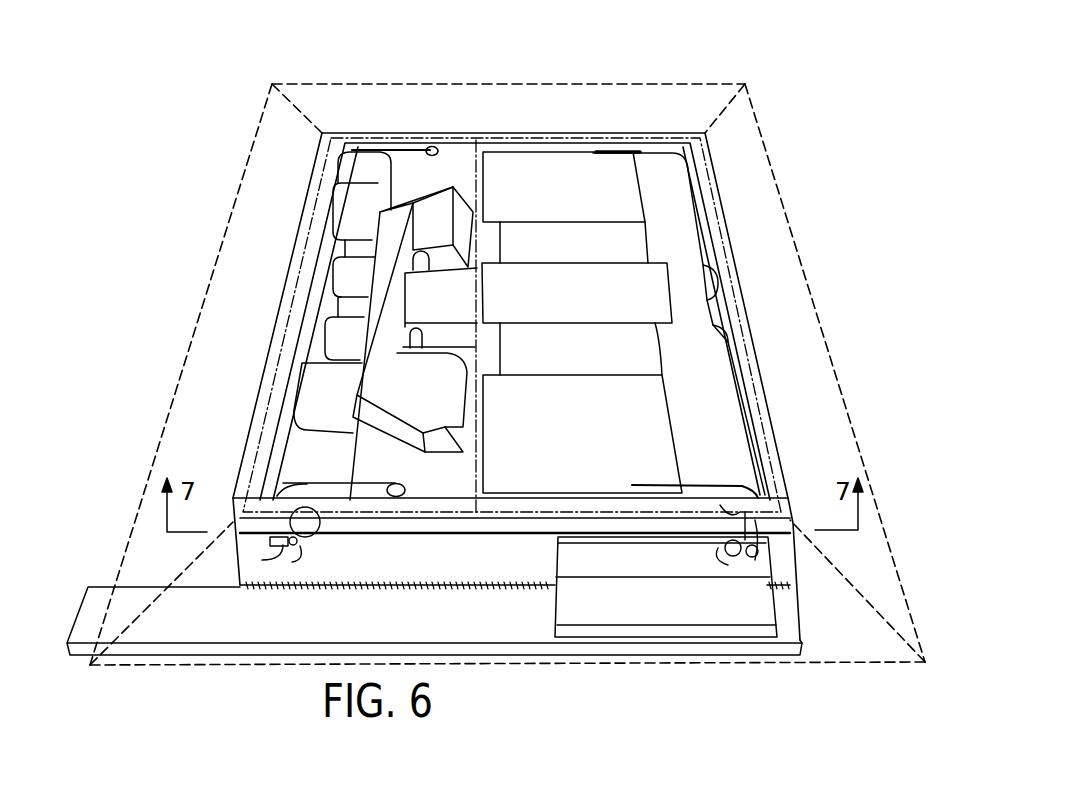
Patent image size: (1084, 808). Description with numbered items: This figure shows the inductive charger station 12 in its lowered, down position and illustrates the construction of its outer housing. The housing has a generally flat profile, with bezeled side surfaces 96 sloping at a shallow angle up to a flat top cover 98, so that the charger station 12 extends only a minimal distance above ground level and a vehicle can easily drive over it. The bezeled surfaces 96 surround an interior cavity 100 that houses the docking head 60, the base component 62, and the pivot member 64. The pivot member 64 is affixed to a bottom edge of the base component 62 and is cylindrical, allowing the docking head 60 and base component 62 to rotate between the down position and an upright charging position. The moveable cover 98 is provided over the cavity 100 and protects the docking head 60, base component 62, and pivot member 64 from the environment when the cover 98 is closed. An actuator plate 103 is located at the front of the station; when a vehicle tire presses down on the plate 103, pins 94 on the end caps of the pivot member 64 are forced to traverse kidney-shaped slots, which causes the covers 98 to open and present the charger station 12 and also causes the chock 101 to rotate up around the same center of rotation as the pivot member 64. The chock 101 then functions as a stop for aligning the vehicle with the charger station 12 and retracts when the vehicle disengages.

The inductive charger station 12 is at (226, 78).
The bezeled side surfaces 96 is at (345, 102).
The docking head 60 is at (443, 180).
The base component 62 is at (556, 172).
The pivot member 64 is at (684, 198).
The interior cavity 100 is at (382, 460).
The pin 94 is at (262, 533).
The flat top cover 98 is at (516, 488).
The chock 101 is at (673, 613).
The actuator plate 103 is at (215, 630).